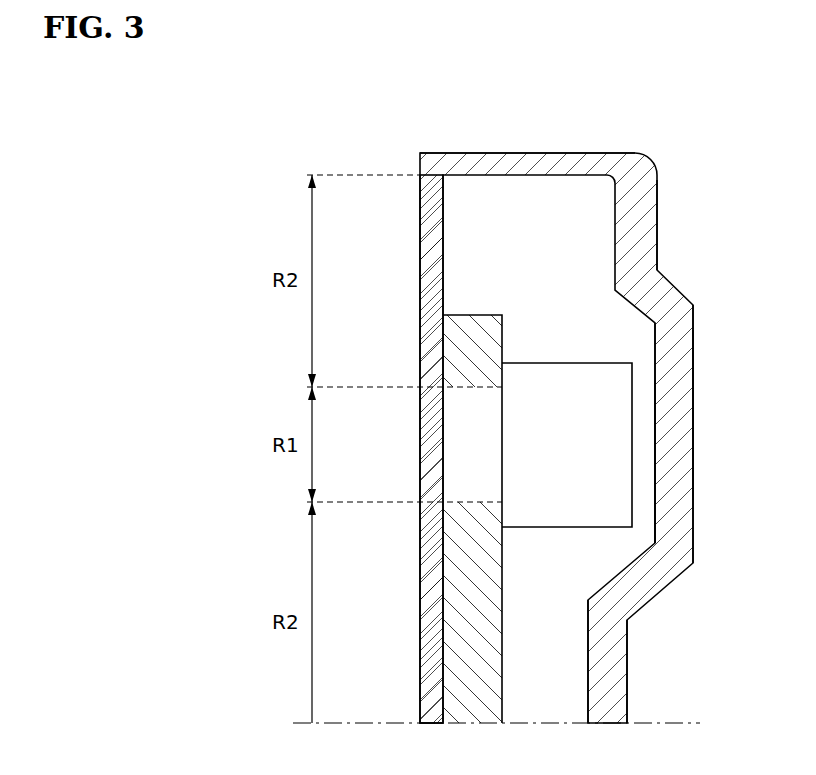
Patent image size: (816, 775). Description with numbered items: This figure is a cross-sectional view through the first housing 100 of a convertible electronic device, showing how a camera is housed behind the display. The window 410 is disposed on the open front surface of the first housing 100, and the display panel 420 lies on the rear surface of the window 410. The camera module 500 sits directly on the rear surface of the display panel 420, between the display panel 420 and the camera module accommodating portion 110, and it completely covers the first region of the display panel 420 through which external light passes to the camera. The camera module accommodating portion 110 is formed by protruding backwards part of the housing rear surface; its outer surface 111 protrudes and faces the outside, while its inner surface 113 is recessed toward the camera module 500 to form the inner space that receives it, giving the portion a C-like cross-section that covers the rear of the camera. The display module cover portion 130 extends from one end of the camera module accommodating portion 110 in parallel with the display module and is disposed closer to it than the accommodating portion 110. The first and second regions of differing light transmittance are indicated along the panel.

The first housing 100 is at (666, 160).
The camera module accommodating portion 110 is at (678, 355).
The outer surface 111 is at (693, 420).
The inner surface 113 is at (655, 459).
The display module cover portion 130 is at (610, 676).
The window 410 is at (433, 228).
The display panel 420 is at (470, 352).
The camera module 500 is at (620, 508).